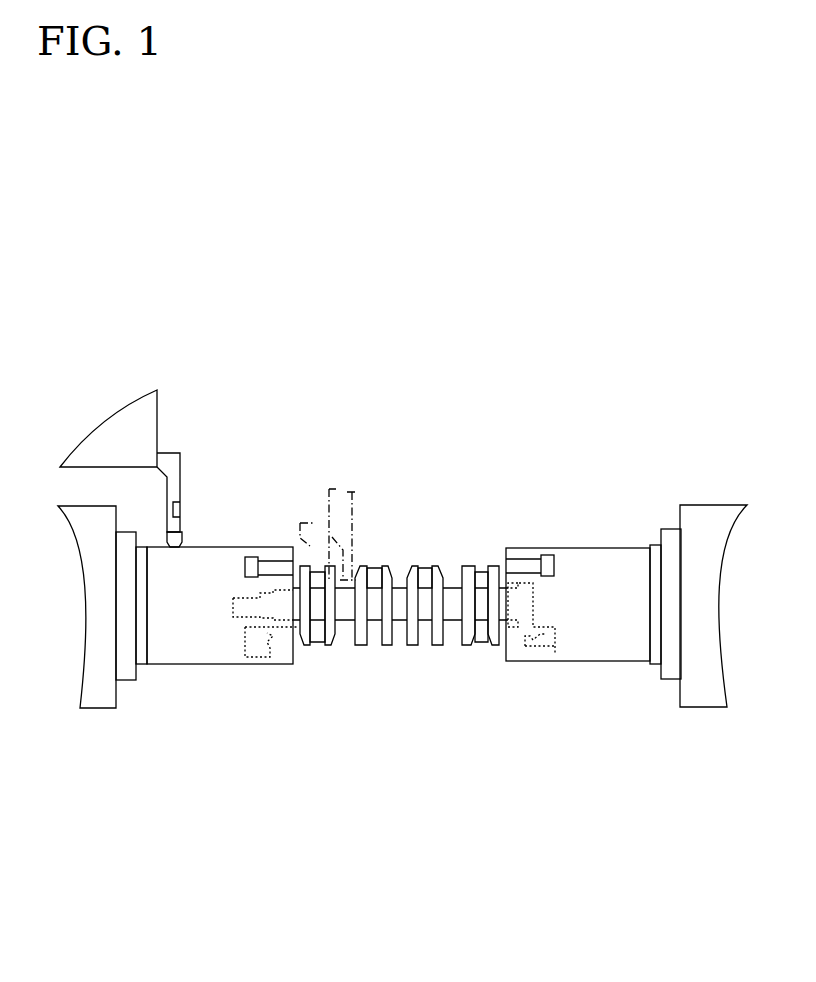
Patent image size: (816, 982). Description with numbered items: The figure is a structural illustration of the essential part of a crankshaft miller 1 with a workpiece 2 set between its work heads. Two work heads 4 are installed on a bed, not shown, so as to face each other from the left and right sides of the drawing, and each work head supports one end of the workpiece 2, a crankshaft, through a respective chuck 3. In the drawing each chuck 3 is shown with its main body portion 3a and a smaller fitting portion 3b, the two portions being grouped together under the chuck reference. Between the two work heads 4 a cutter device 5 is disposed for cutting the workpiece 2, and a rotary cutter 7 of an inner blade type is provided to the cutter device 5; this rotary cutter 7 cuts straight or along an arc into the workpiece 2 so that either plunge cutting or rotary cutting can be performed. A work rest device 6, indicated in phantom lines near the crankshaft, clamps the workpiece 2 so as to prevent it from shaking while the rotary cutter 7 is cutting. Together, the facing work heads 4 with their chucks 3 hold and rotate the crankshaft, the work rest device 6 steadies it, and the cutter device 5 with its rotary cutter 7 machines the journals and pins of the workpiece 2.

The crankshaft miller 1 is at (492, 345).
The workpiece 2 is at (415, 565).
The chuck 3 is at (240, 547).
The motor body 3a is at (224, 665).
The connector 3b is at (253, 556).
The work head 4 is at (95, 708).
The cutter device 5 is at (160, 423).
The work rest device 6 is at (358, 491).
The rotary cutter 7 is at (182, 517).